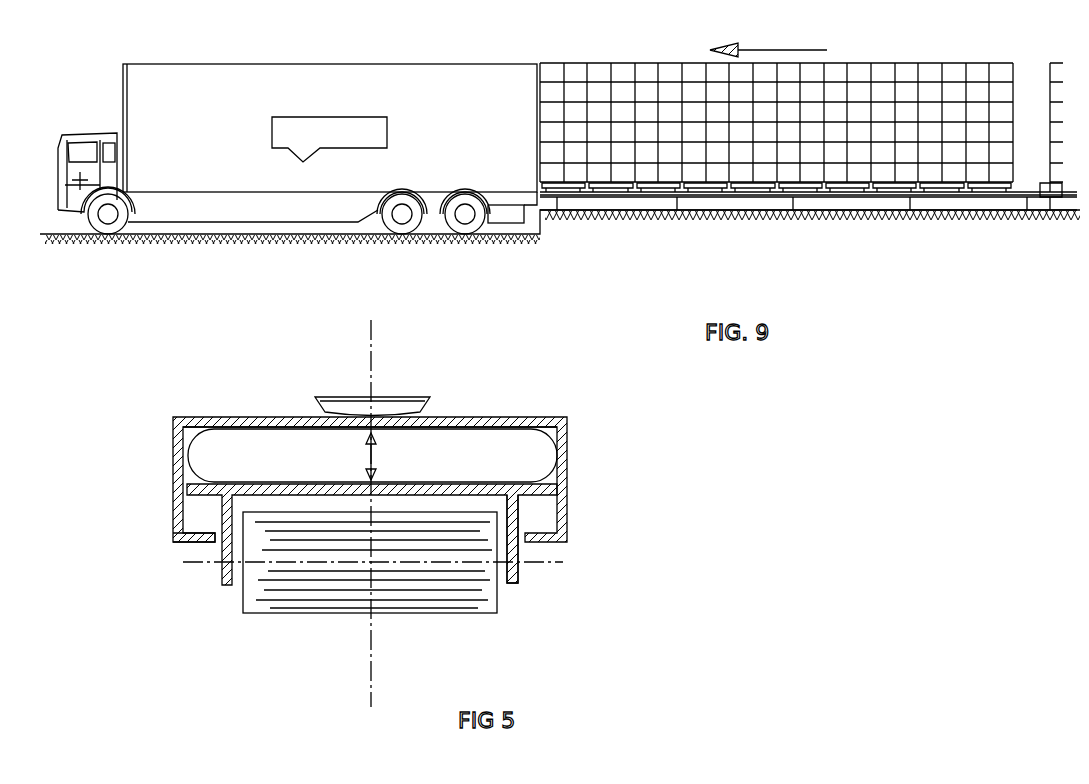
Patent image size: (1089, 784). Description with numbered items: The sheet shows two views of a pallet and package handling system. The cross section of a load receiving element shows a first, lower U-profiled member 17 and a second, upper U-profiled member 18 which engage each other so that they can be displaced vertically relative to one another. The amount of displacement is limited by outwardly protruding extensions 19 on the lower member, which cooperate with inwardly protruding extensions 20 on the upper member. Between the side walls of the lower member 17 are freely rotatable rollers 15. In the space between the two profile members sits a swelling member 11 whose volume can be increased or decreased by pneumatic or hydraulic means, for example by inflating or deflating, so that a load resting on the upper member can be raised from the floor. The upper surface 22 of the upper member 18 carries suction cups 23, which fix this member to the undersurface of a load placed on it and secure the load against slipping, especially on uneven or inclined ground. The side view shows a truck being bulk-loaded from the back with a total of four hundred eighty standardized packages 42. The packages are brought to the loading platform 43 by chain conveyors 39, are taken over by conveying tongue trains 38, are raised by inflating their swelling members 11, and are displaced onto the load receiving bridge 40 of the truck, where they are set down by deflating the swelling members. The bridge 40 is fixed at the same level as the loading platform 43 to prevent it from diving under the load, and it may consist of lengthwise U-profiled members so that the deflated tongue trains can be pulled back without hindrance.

In FIG. 9, the load receiving bridge 40 is at (317, 193).
In FIG. 9, the standardized packages 42 is at (600, 92).
In FIG. 9, the loading platform 43 is at (615, 196).
In FIG. 9, the conveying tongue trains 38 is at (709, 190).
In FIG. 9, the chain conveyors 39 is at (1050, 193).
In FIG. 5, the swelling member 11 is at (240, 437).
In FIG. 5, the suction cups 23 is at (425, 398).
In FIG. 5, the second, upper U-profiled member 18 is at (458, 420).
In FIG. 5, the upper surface 22 is at (541, 418).
In FIG. 5, the outwardly protruding extensions 19 is at (548, 497).
In FIG. 5, the inwardly protruding extensions 20 is at (183, 537).
In FIG. 5, the rollers 15 is at (457, 585).
In FIG. 5, the first, lower U-profiled member 17 is at (515, 583).